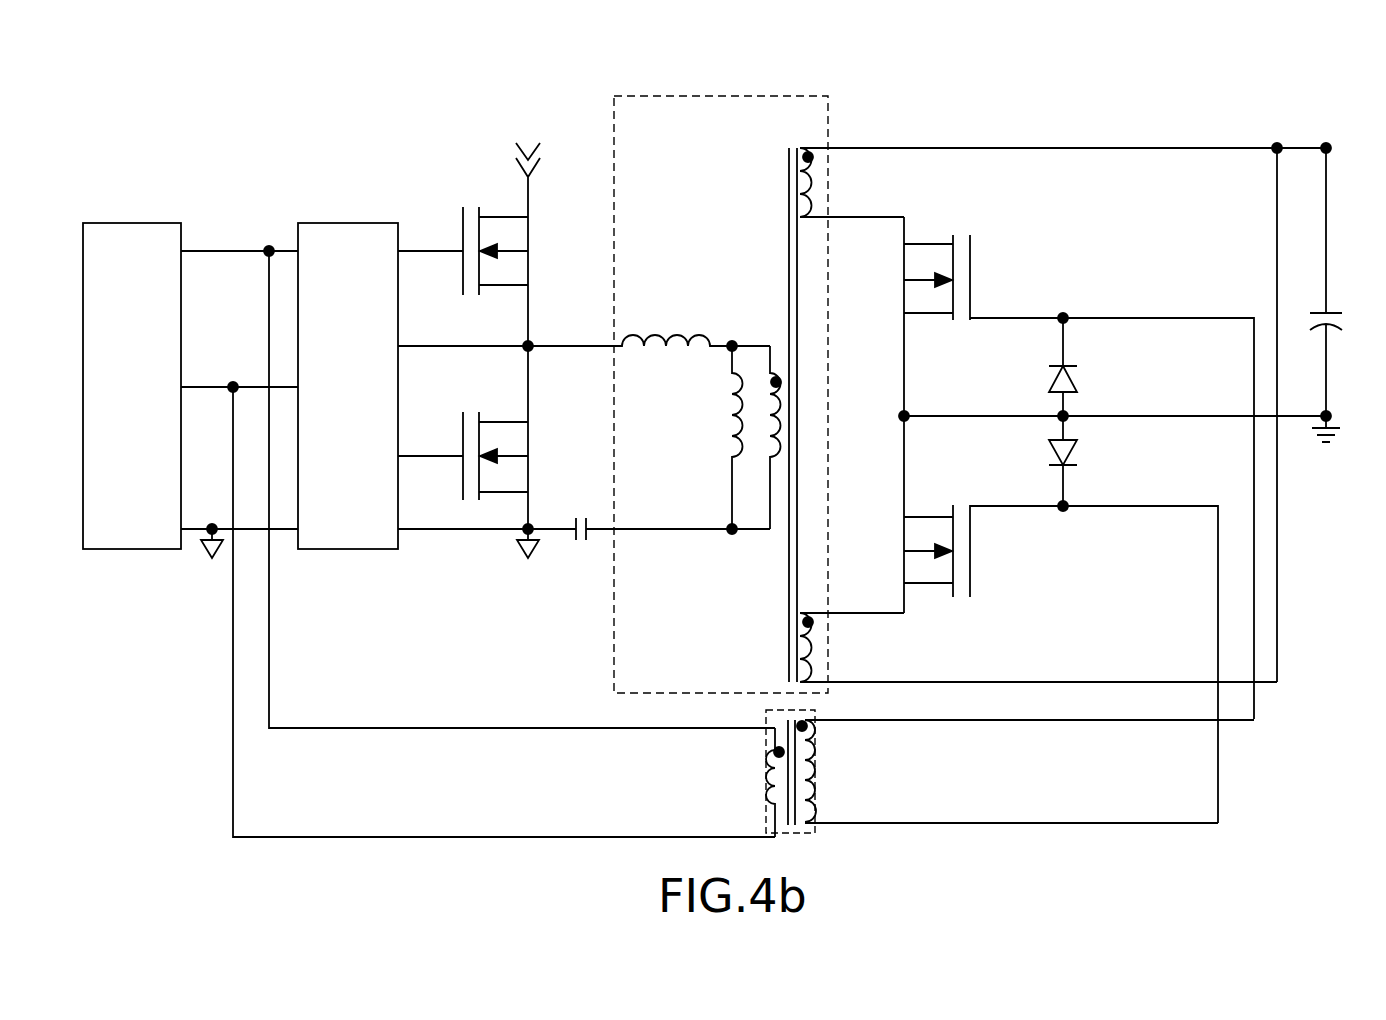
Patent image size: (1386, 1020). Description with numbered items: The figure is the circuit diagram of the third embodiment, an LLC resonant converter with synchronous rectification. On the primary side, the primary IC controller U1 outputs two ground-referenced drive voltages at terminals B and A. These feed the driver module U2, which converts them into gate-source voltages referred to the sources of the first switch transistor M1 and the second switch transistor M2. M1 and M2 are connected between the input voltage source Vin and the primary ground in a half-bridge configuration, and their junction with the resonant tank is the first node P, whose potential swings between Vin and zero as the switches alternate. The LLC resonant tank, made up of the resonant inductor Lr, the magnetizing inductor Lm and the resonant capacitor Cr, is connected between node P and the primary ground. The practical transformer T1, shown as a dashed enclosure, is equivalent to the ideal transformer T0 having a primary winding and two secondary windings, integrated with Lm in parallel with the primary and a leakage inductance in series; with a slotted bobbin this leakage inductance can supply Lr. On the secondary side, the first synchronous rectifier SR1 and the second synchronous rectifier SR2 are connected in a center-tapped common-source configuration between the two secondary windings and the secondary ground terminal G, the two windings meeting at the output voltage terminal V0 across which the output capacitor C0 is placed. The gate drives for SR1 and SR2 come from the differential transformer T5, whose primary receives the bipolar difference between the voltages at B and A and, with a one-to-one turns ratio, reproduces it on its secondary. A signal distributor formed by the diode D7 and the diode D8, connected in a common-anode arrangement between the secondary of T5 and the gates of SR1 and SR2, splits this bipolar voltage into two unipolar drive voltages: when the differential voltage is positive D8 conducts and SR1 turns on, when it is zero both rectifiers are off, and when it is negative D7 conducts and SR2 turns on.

The primary IC controller U1 is at (132, 386).
The driver module U2 is at (348, 386).
The first switch transistor M1 is at (517, 276).
The second switch transistor M2 is at (517, 470).
The input voltage source Vin is at (525, 165).
The output terminal for drive voltage v_B(t) B is at (478, 472).
The output terminal for drive voltage v_A(t) A is at (478, 595).
The first node P is at (517, 381).
The resonant inductor Lr is at (649, 317).
The magnetizing inductor Lm is at (719, 437).
The resonant capacitor Cr is at (579, 516).
The practical transformer T1 is at (970, 359).
The ideal transformer T0 is at (1052, 167).
The first synchronous rectifier SR1 is at (1053, 468).
The second synchronous rectifier SR2 is at (1035, 664).
The secondary ground terminal G is at (1100, 416).
The diode D7 is at (1088, 364).
The diode D8 is at (1088, 463).
The output capacitor C0 is at (1345, 363).
The output voltage terminal V0 is at (1344, 225).
The differential transformer T5 is at (993, 769).